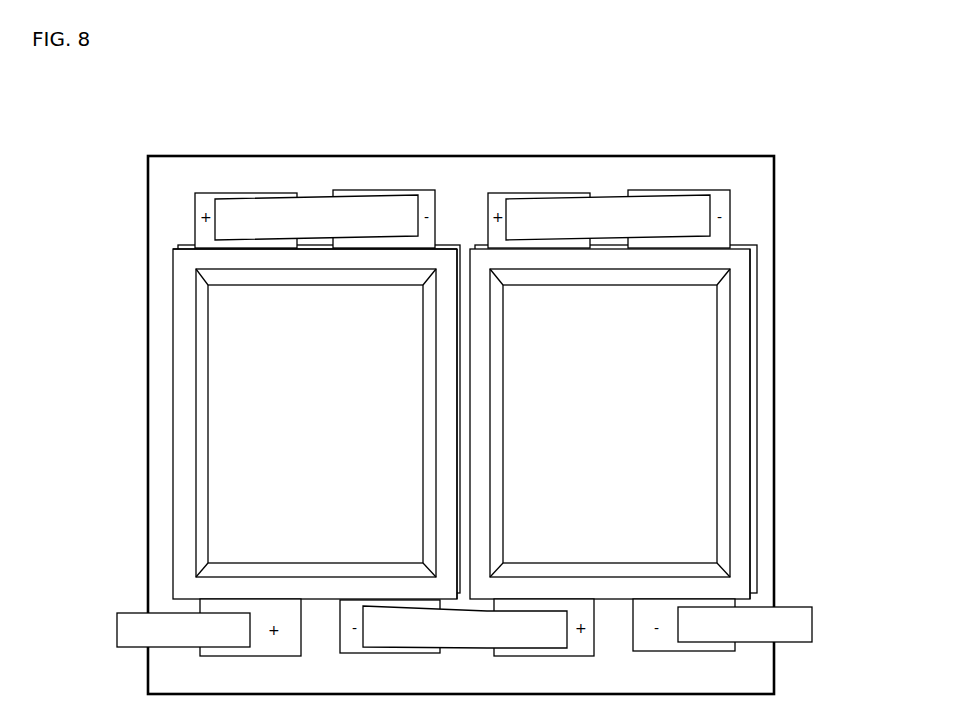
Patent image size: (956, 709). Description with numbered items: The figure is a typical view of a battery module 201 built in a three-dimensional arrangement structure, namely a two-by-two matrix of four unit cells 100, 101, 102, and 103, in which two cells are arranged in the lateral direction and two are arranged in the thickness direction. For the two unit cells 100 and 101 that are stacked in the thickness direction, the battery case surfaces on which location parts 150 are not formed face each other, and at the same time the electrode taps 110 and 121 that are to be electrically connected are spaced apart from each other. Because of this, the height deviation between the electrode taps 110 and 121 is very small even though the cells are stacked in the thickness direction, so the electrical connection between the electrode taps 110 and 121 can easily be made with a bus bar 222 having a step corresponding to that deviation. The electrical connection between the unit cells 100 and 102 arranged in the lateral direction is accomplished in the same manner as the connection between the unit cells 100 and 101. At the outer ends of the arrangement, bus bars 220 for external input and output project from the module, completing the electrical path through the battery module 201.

The battery module 201 is at (72, 98).
The unit cell 100 is at (182, 310).
The unit cell 101 is at (447, 247).
The unit cell 102 is at (743, 537).
The unit cell 103 is at (752, 244).
The electrode tap 110 is at (212, 193).
The electrode tap 121 is at (368, 190).
The location part 150 is at (203, 423).
The bus bar for external input and output 220 is at (117, 613).
The bus bar 222 is at (317, 193).